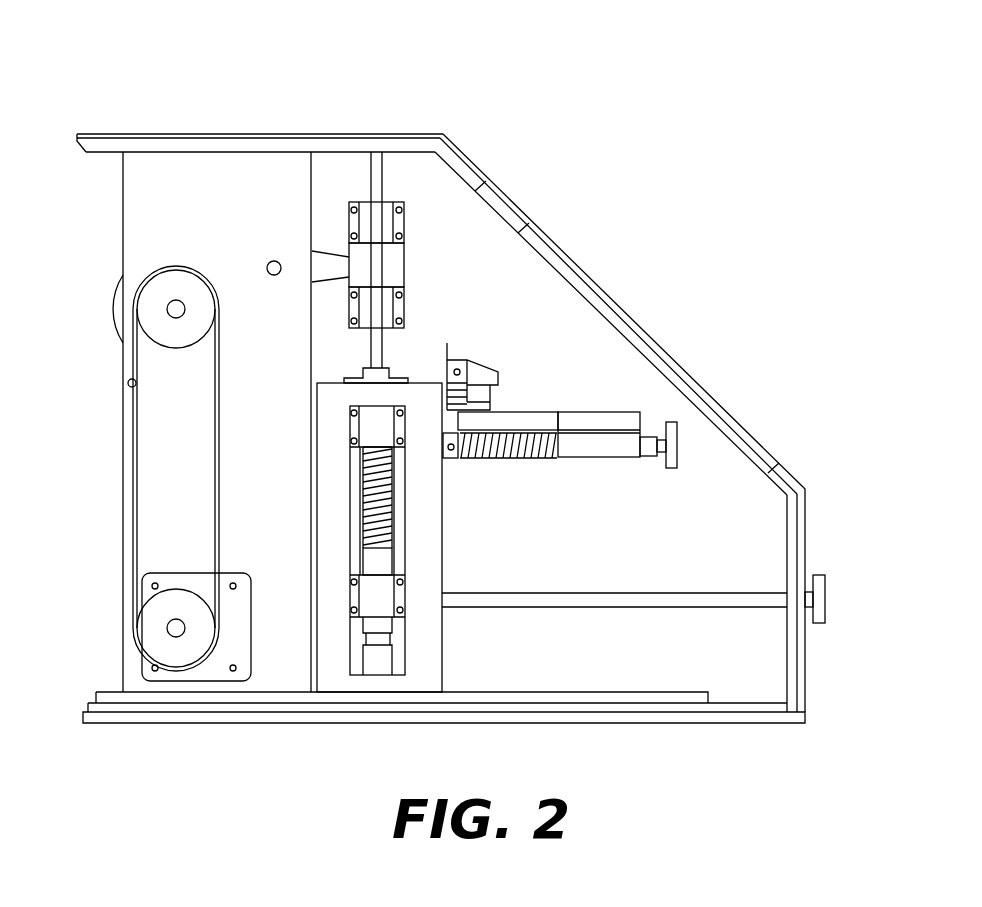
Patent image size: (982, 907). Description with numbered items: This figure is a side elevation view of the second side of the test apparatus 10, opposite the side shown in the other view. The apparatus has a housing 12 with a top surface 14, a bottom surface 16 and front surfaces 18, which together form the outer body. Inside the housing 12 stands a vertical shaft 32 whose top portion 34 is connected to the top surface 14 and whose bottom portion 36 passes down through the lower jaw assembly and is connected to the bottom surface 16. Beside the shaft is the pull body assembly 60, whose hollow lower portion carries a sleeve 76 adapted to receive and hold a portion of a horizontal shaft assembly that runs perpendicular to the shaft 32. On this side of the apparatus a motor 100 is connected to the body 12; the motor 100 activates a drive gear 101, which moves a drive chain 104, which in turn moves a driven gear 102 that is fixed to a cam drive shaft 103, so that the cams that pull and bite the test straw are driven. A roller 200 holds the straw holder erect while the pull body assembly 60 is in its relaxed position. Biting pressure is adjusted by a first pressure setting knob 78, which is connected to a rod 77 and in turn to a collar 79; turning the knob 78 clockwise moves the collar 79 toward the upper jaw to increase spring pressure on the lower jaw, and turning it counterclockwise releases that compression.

The test apparatus 10 is at (453, 102).
The housing 12 is at (528, 220).
The top surface 14 is at (157, 148).
The bottom surface 16 is at (562, 717).
The front surfaces 18 is at (760, 443).
The shaft 32 is at (372, 349).
The top portion 34 is at (380, 180).
The bottom portion 36 is at (379, 658).
The pull body assembly 60 is at (685, 420).
The sleeve 76 is at (623, 456).
The rod 77 is at (637, 600).
The first pressure setting knob 78 is at (835, 584).
The collar 79 is at (378, 563).
The motor 100 is at (190, 690).
The drive gear 101 is at (155, 628).
The driven gear 102 is at (155, 288).
The cam drive shaft 103 is at (167, 309).
The drive chain 104 is at (125, 488).
The roller 200 is at (496, 402).